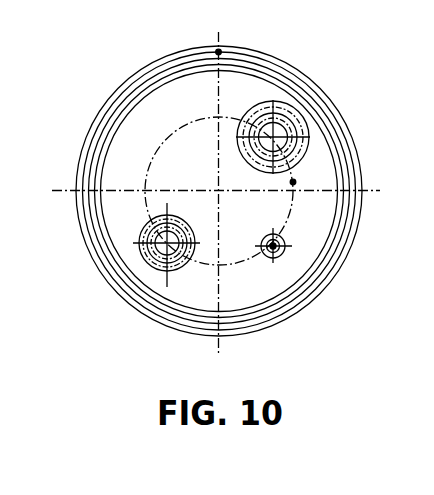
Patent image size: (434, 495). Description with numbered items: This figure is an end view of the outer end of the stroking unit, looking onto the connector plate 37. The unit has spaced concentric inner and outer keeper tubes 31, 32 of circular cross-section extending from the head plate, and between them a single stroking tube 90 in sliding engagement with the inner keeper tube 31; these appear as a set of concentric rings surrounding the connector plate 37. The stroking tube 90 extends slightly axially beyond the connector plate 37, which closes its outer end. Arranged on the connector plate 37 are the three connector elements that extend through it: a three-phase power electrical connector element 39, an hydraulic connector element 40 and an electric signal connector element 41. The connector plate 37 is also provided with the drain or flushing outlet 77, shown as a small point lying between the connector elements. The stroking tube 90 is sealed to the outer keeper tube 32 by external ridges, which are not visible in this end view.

The stroking tube 90 is at (122, 107).
The outer keeper tube 32 is at (92, 243).
The inner keeper tube 31 is at (145, 288).
The connector plate 37 is at (242, 292).
The three-phase power electrical connector element 39 is at (288, 120).
The electric signal connector element 41 is at (152, 237).
The hydraulic connector element 40 is at (285, 251).
The drain or flushing outlet 77 is at (293, 182).